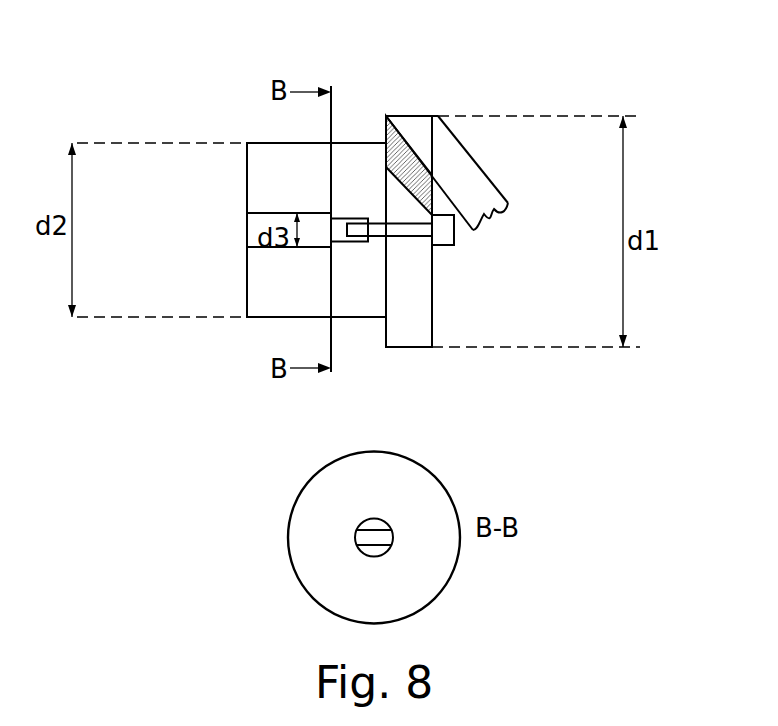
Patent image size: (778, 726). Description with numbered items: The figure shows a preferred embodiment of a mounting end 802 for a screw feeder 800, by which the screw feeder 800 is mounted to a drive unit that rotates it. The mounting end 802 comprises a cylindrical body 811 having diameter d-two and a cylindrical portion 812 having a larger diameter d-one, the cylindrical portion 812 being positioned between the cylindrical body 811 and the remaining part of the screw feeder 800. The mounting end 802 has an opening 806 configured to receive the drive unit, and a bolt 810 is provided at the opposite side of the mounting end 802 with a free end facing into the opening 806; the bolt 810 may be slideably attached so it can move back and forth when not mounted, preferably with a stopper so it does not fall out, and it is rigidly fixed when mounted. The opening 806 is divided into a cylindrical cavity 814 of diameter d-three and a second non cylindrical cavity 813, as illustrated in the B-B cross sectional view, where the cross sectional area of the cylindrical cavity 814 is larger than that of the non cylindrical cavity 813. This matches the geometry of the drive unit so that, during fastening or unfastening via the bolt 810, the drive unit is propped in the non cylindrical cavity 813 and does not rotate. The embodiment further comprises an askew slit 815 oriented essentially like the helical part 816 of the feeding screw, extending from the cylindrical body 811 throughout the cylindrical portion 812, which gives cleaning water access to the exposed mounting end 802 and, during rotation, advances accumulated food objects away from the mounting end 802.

The screw feeder 800 is at (582, 388).
The mounting end 802 is at (378, 96).
The opening 806 is at (232, 228).
The bolt 810 is at (445, 231).
The cylindrical body 811 is at (273, 287).
The cylindrical portion 812 is at (420, 310).
The non cylindrical cavity 813 is at (341, 226).
The cylindrical cavity 814 is at (253, 218).
The askew slit 815 is at (402, 152).
The helical part 816 is at (463, 160).